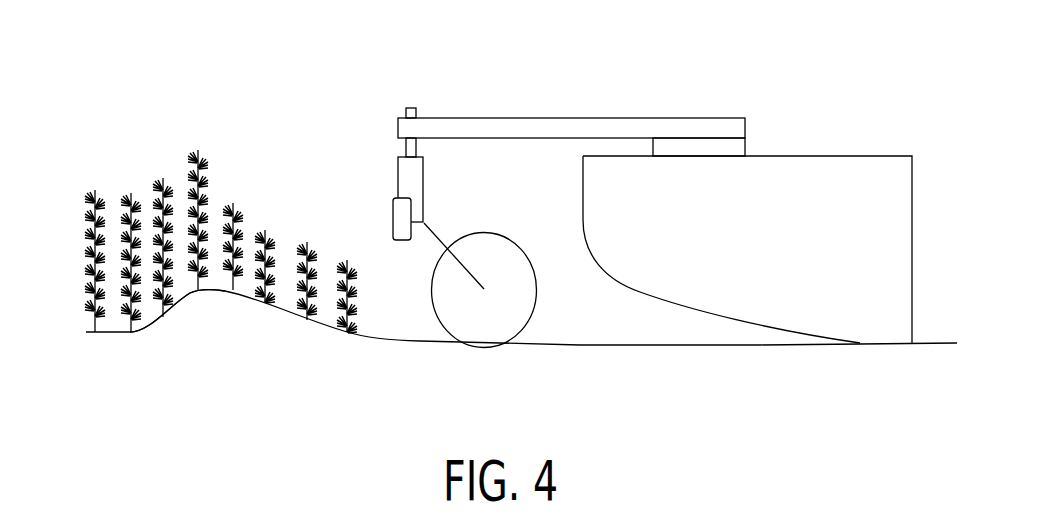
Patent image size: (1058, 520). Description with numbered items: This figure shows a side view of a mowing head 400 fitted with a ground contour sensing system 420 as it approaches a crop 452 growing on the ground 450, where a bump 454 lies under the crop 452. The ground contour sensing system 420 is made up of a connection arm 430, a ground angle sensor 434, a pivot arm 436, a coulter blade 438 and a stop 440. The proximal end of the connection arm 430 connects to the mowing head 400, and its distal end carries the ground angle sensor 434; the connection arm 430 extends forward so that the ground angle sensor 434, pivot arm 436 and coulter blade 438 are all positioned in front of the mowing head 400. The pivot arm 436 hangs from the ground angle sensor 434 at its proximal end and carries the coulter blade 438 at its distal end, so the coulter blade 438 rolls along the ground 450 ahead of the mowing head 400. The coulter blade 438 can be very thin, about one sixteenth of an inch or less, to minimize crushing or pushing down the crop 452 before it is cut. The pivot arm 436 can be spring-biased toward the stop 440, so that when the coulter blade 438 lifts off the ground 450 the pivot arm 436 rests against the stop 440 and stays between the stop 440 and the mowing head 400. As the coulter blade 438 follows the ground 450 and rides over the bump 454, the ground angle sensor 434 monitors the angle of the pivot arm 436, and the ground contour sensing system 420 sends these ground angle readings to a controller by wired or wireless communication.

The mowing head 400 is at (862, 175).
The ground contour sensing system 420 is at (534, 190).
The connection arm 430 is at (571, 117).
The ground angle sensor 434 is at (398, 175).
The pivot arm 436 is at (433, 232).
The coulter blade 438 is at (537, 288).
The stop 440 is at (393, 212).
The ground 450 is at (371, 340).
The crop 452 is at (118, 98).
The bump 454 is at (212, 292).